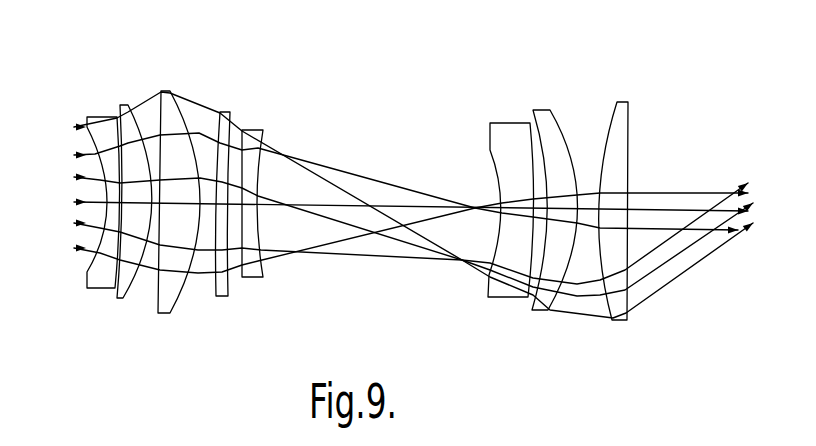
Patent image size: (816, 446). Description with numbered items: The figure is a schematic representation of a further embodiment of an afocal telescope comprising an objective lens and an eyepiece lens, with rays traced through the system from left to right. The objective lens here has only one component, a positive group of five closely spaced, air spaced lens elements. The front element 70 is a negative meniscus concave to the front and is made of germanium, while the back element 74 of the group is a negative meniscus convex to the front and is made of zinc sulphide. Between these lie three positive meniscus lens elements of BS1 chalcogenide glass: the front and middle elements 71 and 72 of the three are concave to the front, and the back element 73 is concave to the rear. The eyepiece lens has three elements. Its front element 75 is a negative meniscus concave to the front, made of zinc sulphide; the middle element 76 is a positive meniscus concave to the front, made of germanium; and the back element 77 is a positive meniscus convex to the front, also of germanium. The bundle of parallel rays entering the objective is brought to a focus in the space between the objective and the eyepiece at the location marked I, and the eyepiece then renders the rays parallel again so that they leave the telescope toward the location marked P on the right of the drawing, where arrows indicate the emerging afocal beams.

The front element 70 is at (97, 117).
The front positive meniscus lens element 71 is at (119, 106).
The middle positive meniscus lens element 72 is at (163, 91).
The back positive meniscus lens element 73 is at (226, 111).
The back element 74 is at (257, 130).
The front element of eyepiece lens 75 is at (507, 123).
The middle element of eyepiece lens 76 is at (542, 110).
The back element of eyepiece lens 77 is at (623, 102).
The intermediate image I is at (466, 285).
The exit pupil P is at (720, 273).